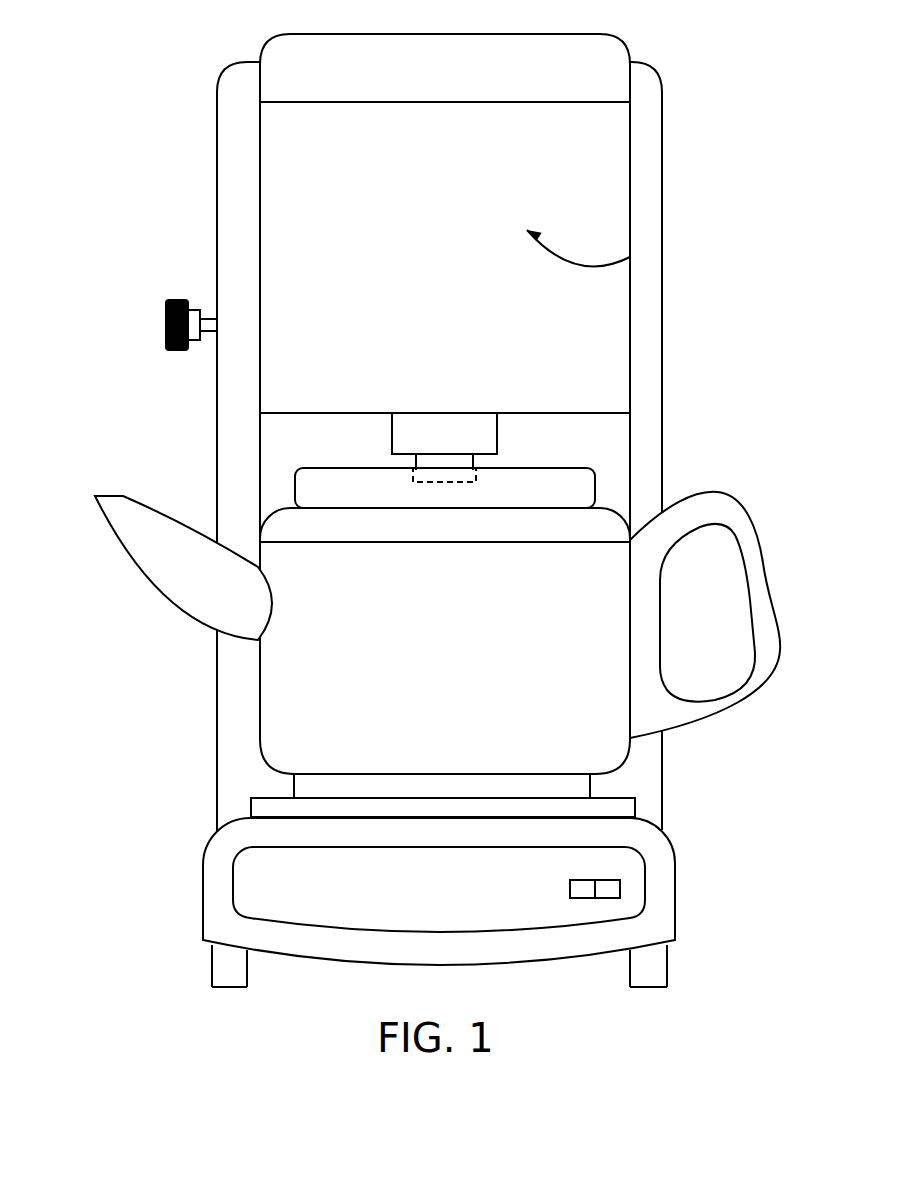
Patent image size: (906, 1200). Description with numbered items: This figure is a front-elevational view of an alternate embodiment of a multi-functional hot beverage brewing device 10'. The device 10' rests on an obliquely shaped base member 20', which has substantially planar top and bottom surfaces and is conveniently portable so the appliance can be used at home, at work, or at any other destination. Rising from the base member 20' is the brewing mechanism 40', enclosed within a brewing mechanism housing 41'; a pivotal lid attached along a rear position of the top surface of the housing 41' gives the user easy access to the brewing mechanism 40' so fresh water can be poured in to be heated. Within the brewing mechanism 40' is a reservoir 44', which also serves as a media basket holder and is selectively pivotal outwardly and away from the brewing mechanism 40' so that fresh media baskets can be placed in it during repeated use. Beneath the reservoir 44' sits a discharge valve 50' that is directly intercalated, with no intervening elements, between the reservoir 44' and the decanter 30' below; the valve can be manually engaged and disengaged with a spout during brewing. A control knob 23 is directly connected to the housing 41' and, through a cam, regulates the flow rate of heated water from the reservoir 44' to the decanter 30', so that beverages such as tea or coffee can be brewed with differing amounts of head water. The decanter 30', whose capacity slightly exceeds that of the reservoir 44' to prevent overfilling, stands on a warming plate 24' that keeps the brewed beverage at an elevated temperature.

The device 10' is at (411, 499).
The base member 20' is at (381, 902).
The control knob 23 is at (166, 324).
The warming plate 24' is at (493, 796).
The decanter 30' is at (437, 621).
The brewing mechanism 40' is at (689, 446).
The brewing mechanism housing 41' is at (202, 447).
The reservoir 44' is at (499, 387).
The discharge valve 50' is at (502, 447).